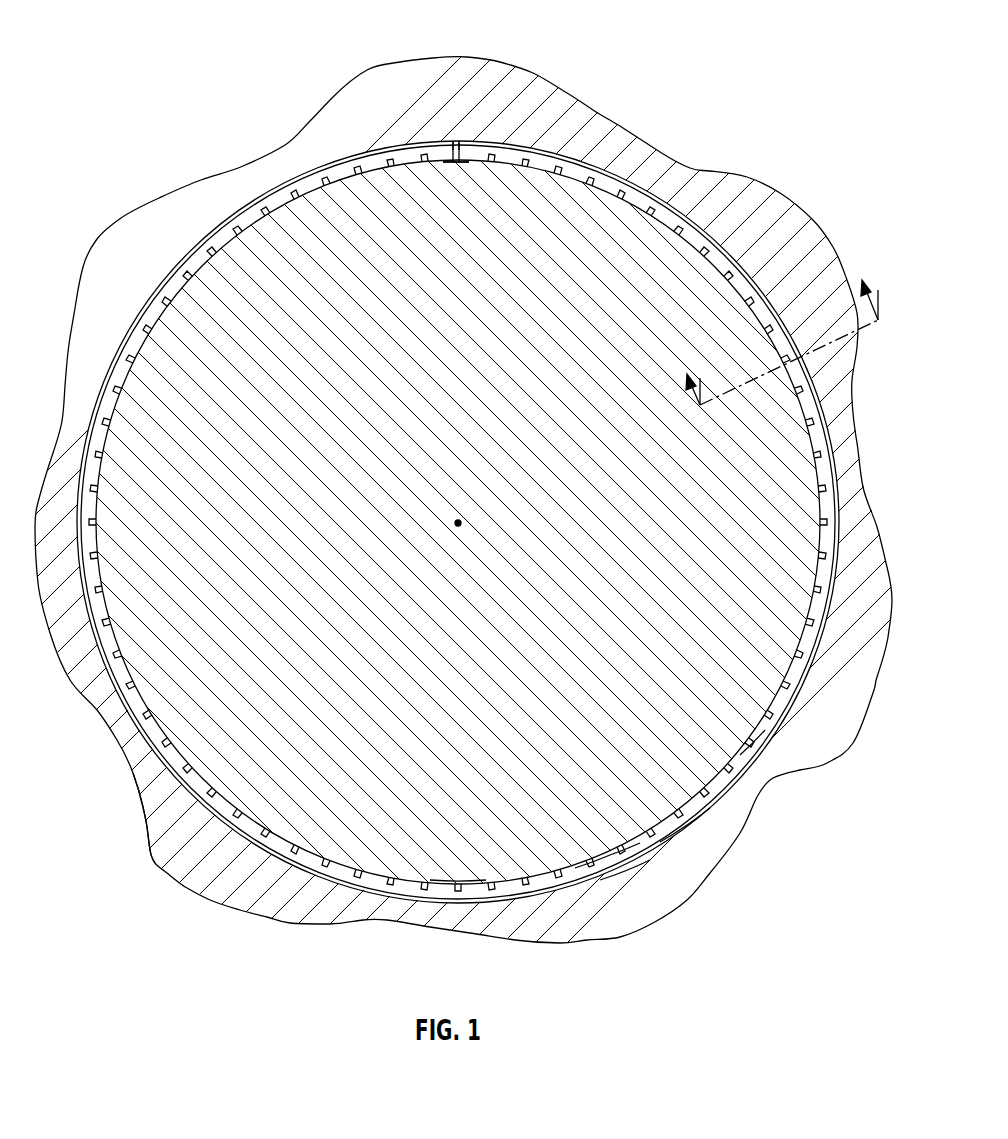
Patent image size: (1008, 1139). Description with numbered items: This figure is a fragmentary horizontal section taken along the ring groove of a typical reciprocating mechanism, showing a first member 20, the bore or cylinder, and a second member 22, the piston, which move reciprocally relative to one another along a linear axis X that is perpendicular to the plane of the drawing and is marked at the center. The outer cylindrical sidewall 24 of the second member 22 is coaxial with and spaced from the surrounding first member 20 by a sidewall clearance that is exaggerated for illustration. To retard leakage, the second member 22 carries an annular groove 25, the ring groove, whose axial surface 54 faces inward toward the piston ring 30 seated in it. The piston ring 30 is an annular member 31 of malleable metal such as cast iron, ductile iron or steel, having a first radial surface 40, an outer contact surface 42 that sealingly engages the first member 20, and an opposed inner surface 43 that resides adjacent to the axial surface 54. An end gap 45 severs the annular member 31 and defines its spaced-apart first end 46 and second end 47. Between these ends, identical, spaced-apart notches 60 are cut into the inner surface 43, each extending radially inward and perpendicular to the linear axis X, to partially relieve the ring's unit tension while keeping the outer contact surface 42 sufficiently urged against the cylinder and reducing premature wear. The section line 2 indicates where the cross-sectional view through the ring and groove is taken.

The first member 20 is at (598, 102).
The second member 22 is at (667, 226).
The outer cylindrical sidewall 24 is at (220, 780).
The annular groove 25 is at (142, 790).
The piston ring 30 is at (460, 881).
The annular member 31 is at (623, 852).
The first radial surface 40 is at (685, 815).
The outer contact surface 42 is at (622, 872).
The inner surface 43 is at (592, 860).
The end gap 45 is at (455, 140).
The first end 46 is at (462, 158).
The second end 47 is at (452, 163).
The axial surface 54 is at (752, 740).
The notches 60 is at (622, 197).
The linear axis X is at (462, 522).
The section line 2- 2 is at (776, 326).